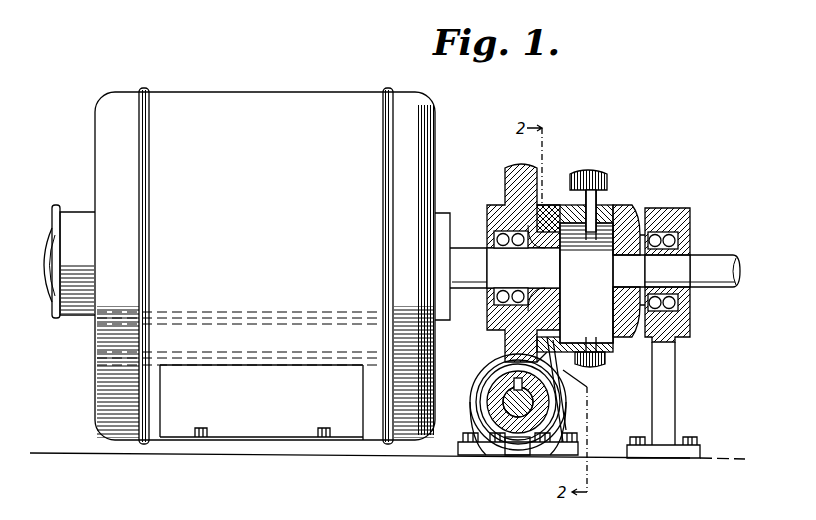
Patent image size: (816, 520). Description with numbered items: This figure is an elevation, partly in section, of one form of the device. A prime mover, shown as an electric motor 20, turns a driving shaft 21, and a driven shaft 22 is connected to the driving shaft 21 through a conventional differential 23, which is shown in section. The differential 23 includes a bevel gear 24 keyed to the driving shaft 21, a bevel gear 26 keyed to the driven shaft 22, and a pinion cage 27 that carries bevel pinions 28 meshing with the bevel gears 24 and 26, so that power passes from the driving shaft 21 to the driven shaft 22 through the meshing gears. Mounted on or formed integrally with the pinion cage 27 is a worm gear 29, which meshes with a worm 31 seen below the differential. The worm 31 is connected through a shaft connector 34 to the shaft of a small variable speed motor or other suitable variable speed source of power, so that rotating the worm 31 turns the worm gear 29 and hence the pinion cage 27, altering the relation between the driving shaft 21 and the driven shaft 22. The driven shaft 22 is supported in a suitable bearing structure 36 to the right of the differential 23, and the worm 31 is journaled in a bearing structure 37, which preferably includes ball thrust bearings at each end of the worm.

The electric motor 20 is at (266, 106).
The driving shaft 21 is at (458, 246).
The driven shaft 22 is at (714, 290).
The differential 23 is at (628, 208).
The bevel gear 24 is at (548, 200).
The bevel gear 26 is at (632, 222).
The pinion cage 27 is at (574, 200).
The bevel pinions 28 is at (618, 203).
The worm gear 29 is at (503, 176).
The worm 31 is at (492, 390).
The shaft connector 34 is at (482, 368).
The bearing structure 36 is at (676, 210).
The bearing structure 37 is at (521, 448).